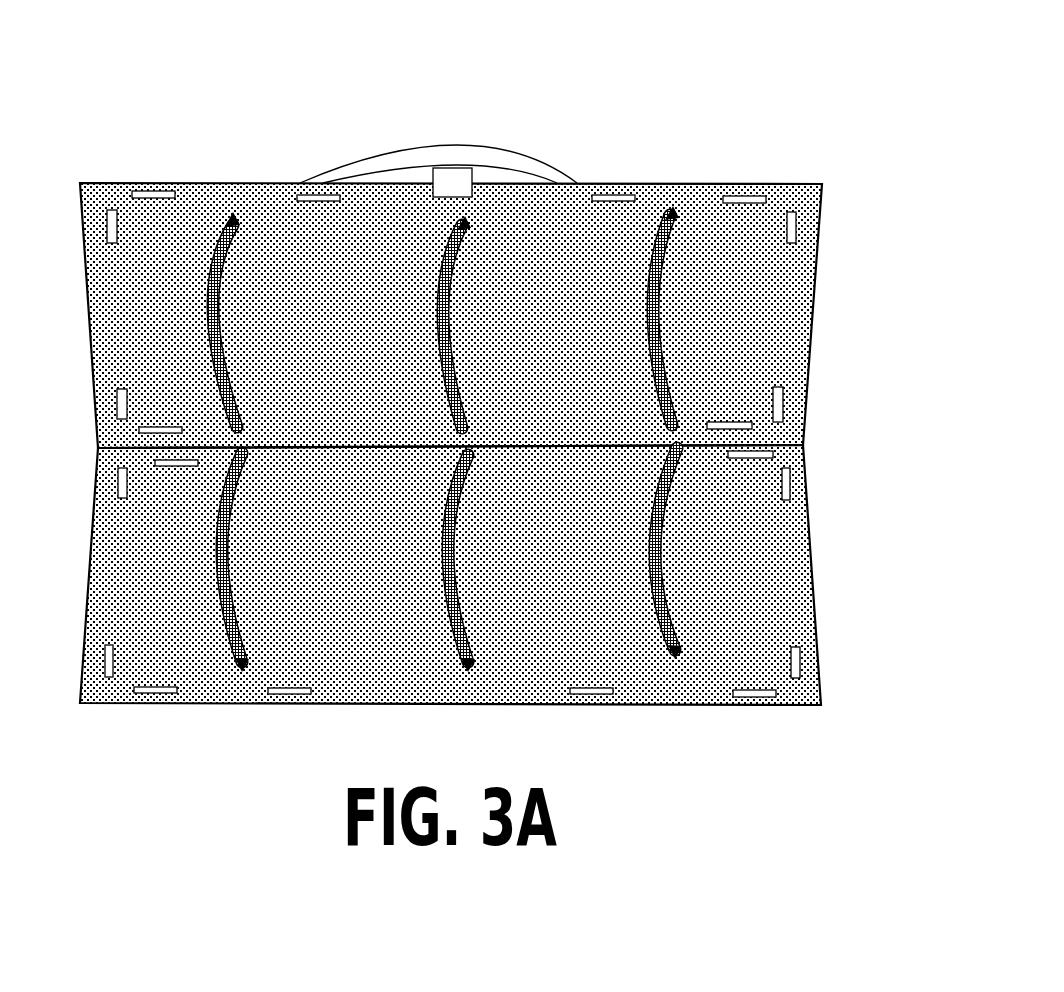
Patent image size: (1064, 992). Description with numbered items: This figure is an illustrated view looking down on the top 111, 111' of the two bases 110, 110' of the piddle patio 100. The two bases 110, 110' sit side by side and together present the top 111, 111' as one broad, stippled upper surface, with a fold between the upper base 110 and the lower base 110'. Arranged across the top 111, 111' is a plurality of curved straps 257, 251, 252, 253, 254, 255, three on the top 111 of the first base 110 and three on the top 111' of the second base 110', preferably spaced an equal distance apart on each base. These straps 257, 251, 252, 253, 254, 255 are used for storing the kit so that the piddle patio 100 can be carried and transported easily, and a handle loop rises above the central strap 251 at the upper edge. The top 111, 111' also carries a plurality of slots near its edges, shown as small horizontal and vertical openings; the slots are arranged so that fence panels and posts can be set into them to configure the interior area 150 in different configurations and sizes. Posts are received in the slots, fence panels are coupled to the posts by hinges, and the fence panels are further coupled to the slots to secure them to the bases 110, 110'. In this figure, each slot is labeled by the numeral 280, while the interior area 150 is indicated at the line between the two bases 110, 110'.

The piddle patio 100 is at (427, 36).
The base 110 is at (551, 315).
The base 110' is at (572, 575).
The top 111 is at (855, 271).
The top 111' is at (859, 526).
The interior area 150 is at (660, 423).
The strap 251 is at (467, 215).
The strap 252 is at (674, 205).
The strap 253 is at (676, 662).
The strap 254 is at (468, 674).
The strap 255 is at (242, 673).
The strap 257 is at (233, 211).
The slot 280 is at (808, 224).